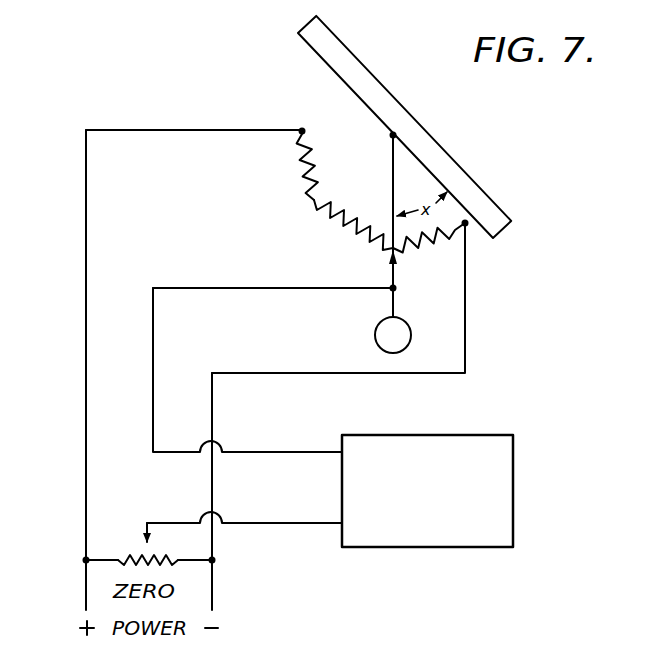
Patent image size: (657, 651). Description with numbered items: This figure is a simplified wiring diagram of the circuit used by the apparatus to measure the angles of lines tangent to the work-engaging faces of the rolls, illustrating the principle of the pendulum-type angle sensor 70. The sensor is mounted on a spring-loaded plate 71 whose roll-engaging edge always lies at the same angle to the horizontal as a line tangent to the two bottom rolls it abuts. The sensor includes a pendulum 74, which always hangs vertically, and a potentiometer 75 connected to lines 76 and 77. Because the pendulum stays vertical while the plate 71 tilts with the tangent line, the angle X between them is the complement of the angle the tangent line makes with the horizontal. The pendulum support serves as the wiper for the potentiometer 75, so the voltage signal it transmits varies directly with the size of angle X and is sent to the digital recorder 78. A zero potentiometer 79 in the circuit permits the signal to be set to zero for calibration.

The angle sensor 70 is at (292, 171).
The plate 71 is at (433, 139).
The pendulum 74 is at (375, 337).
The potentiometer 75 is at (315, 200).
The line 76 is at (85, 413).
The line 77 is at (213, 415).
The digital recorder 78 is at (515, 480).
The zero potentiometer 79 is at (126, 553).